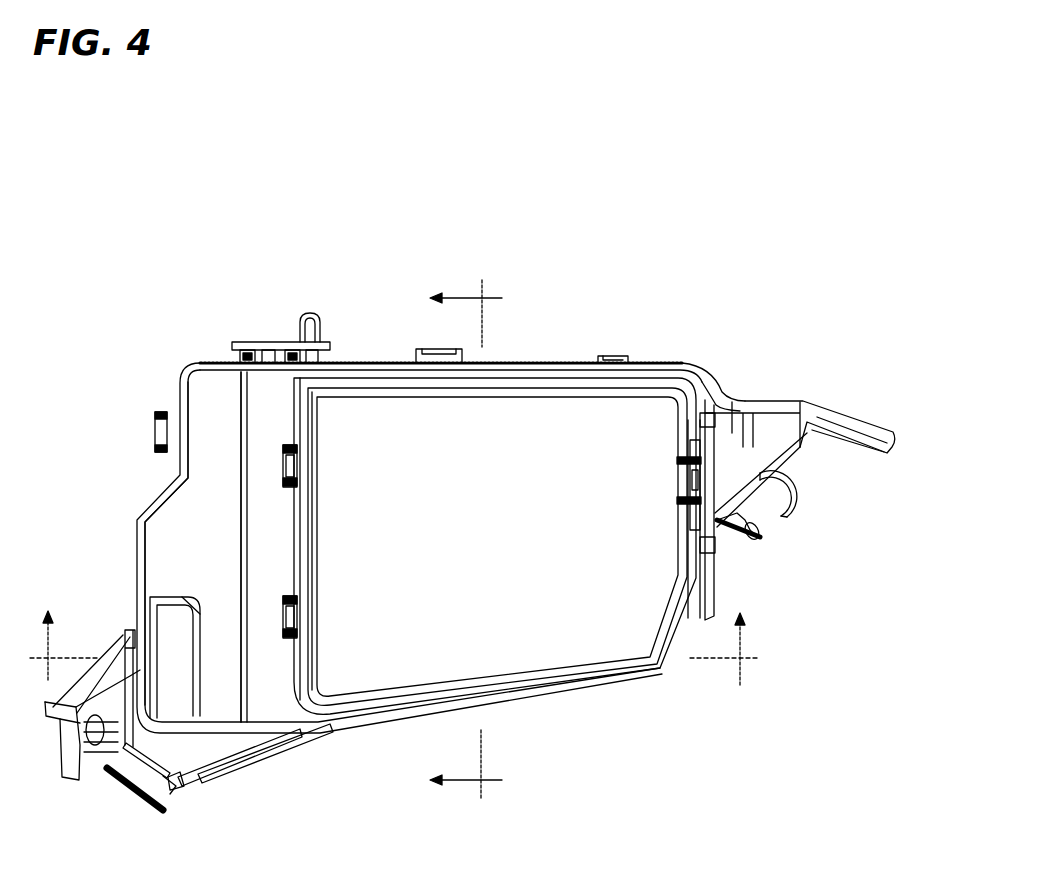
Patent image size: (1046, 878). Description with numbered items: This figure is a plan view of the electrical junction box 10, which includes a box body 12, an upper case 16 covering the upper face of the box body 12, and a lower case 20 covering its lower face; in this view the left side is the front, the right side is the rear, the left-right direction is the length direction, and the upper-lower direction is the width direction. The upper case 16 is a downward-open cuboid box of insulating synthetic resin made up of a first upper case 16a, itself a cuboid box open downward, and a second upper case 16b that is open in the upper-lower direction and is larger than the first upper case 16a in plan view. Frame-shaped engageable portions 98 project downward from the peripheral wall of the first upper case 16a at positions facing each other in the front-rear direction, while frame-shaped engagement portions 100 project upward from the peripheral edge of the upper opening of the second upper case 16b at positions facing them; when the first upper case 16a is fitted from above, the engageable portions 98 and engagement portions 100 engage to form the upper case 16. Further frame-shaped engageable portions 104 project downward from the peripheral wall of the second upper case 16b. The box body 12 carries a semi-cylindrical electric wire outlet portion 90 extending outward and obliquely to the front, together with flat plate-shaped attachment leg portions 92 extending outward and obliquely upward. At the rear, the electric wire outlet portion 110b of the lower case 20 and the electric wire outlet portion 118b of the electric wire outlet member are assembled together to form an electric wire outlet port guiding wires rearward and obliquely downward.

The electrical junction box 10 is at (529, 248).
The box body 12 is at (752, 367).
The upper case 16 is at (556, 318).
The first upper case 16a is at (567, 412).
The second upper case 16b is at (213, 443).
The lower case 20 is at (230, 800).
The electric wire outlet portion 90 is at (173, 753).
The attachment leg portion 92 is at (780, 430).
The engageable portion 98 is at (289, 447).
The engagement portion 100 is at (288, 461).
The engageable portion 104 is at (707, 420).
The electric wire outlet portion 110b is at (737, 524).
The electric wire outlet portion 118b is at (760, 502).